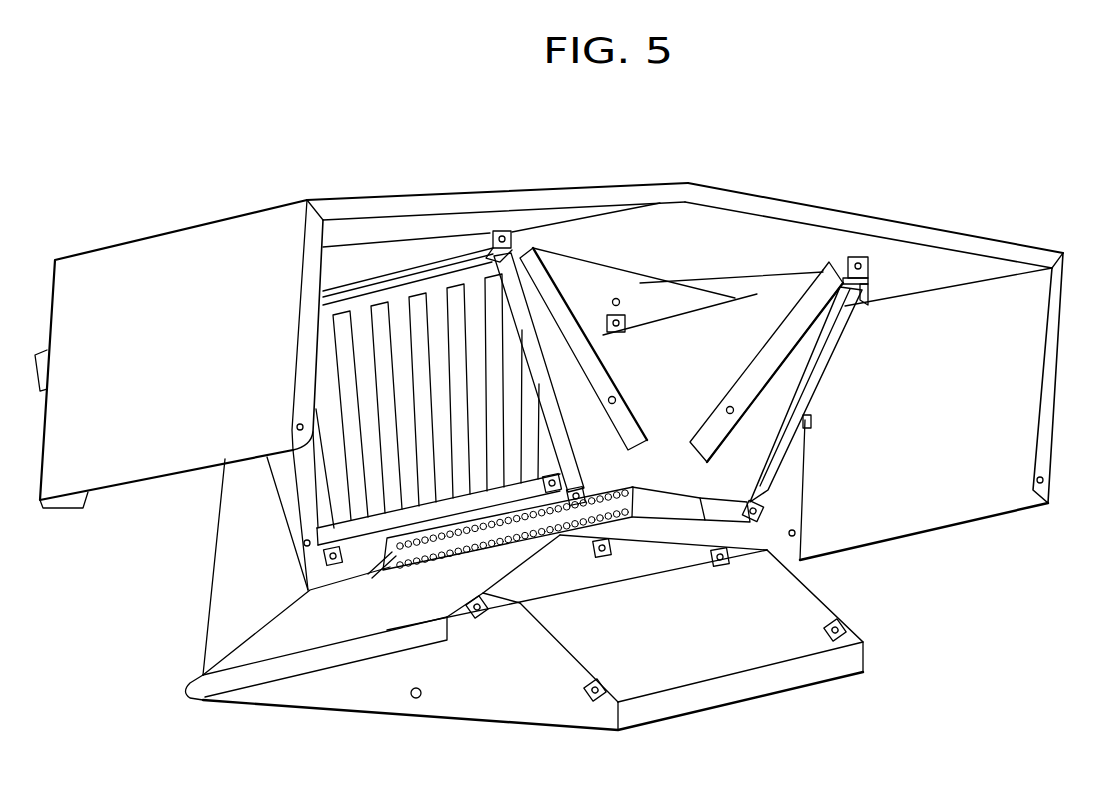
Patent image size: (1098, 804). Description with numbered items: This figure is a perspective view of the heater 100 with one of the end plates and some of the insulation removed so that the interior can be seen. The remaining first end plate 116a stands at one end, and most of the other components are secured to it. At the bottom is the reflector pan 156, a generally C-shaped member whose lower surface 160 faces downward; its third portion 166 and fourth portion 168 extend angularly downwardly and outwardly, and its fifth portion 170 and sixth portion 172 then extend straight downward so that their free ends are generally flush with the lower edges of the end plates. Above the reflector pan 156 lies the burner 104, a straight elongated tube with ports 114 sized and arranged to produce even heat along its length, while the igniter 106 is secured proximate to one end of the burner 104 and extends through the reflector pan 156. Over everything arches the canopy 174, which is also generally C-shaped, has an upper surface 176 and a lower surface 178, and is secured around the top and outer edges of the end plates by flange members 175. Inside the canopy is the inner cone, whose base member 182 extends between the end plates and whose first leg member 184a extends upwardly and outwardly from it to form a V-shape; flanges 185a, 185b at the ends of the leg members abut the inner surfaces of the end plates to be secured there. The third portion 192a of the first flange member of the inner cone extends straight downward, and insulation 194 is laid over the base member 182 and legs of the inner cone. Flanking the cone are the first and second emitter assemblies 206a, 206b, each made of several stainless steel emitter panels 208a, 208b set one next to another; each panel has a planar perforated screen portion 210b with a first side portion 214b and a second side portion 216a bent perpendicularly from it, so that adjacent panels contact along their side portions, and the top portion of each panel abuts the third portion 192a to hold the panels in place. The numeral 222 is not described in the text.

The heater 100 is at (740, 128).
The burner 104 is at (643, 512).
The igniter 106 is at (385, 560).
The ports 114 is at (600, 547).
The first end plate 116a is at (320, 682).
The reflector pan 156 is at (775, 620).
The lower surface 160 is at (645, 664).
The third portion 166 is at (260, 650).
The fourth portion 168 is at (800, 580).
The fifth portion 170 is at (223, 683).
The sixth portion 172 is at (797, 670).
The canopy 174 is at (550, 197).
The flange members 175 is at (918, 247).
The upper surface 176 is at (185, 373).
The lower surface 178 is at (998, 385).
The base member 182 is at (693, 563).
The first leg member 184a is at (552, 350).
The flange 185a is at (520, 228).
The flange 185b is at (822, 275).
The third portion 192a is at (400, 295).
The insulation 194 is at (688, 350).
The first emitter assembly 206a is at (308, 488).
The second emitter assembly 206b is at (812, 423).
The emitter panel 208a is at (360, 325).
The emitter panel 208b is at (810, 342).
The screen portion 210b is at (790, 370).
The first side portion 214b is at (813, 387).
The second side portion 216a is at (488, 250).
The vertical post 222 is at (243, 588).